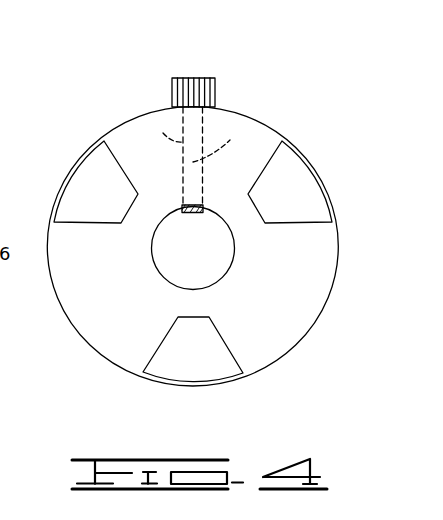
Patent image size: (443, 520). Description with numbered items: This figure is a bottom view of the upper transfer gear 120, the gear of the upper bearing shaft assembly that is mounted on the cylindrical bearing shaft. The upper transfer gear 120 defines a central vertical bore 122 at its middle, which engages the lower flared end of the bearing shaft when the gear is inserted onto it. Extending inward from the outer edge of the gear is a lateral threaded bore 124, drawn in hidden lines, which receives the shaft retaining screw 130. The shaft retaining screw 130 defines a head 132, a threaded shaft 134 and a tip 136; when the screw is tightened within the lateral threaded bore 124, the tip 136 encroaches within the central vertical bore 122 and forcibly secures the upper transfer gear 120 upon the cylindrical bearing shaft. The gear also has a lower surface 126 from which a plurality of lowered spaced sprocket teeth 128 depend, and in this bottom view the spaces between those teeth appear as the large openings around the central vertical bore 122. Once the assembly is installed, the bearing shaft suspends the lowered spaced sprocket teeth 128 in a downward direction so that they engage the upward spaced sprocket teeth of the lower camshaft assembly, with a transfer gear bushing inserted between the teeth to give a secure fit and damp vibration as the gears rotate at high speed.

The upper transfer gear 120 is at (317, 322).
The central vertical bore 122 is at (167, 262).
The lateral threaded bore 124 is at (157, 128).
The lower surface 126 is at (267, 338).
The lowered spaced sprocket teeth 128 is at (173, 365).
The shaft retaining screw 130 is at (233, 132).
The head 132 is at (201, 78).
The threaded shaft 134 is at (204, 209).
The tip 136 is at (195, 213).